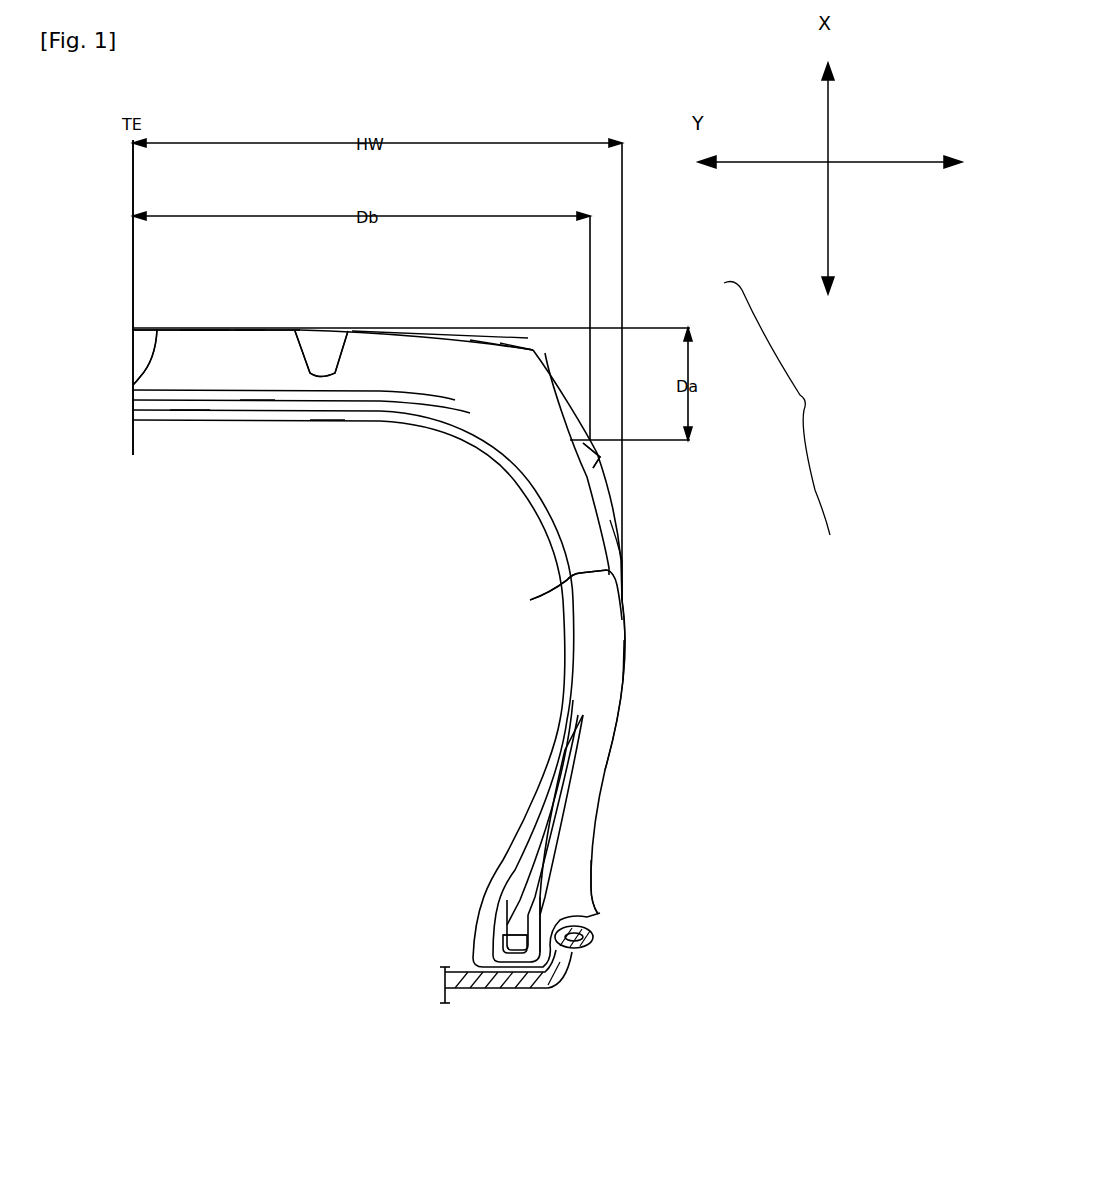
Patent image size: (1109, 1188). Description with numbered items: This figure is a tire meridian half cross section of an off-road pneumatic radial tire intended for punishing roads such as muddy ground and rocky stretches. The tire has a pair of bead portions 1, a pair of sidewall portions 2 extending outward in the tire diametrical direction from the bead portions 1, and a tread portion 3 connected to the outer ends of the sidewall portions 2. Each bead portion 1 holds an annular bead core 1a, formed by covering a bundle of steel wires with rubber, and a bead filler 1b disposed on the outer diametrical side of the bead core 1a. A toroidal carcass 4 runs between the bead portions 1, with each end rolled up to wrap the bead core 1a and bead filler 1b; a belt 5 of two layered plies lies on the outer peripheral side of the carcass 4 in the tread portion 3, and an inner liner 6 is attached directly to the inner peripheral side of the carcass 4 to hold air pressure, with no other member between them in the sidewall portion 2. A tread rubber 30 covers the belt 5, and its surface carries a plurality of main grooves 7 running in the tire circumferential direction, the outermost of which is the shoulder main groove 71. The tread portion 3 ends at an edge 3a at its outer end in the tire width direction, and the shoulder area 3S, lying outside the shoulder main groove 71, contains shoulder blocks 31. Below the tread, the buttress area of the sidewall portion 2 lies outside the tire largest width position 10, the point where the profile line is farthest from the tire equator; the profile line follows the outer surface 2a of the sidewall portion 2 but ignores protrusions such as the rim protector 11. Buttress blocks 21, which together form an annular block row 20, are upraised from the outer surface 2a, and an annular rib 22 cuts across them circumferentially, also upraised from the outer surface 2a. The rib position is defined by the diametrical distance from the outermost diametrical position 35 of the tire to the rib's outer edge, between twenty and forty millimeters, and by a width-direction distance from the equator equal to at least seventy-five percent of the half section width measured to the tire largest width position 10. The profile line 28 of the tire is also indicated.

The bead portion 1 is at (245, 705).
The bead core 1a is at (500, 935).
The bead filler 1b is at (515, 878).
The sidewall portion 2 is at (622, 677).
The outer surface of the sidewall portion 2a is at (530, 600).
The tread portion 3 is at (200, 328).
The edge 3a is at (533, 350).
The shoulder area 3S is at (528, 303).
The carcass 4 is at (188, 410).
The belt 5 is at (257, 400).
The inner liner 6 is at (328, 420).
The main groove 7 is at (157, 330).
The shoulder main groove 71 is at (325, 328).
The tire largest width position 10 is at (622, 645).
The rim protector 11 is at (593, 883).
The annular block row 20 is at (660, 596).
The buttress block 21 is at (621, 540).
The annular rib 22 is at (612, 447).
The tire outer profile line 28 is at (783, 408).
The tread rubber 30 is at (247, 356).
The shoulder block 31 is at (505, 343).
The outermost diametrical position 35 is at (148, 338).